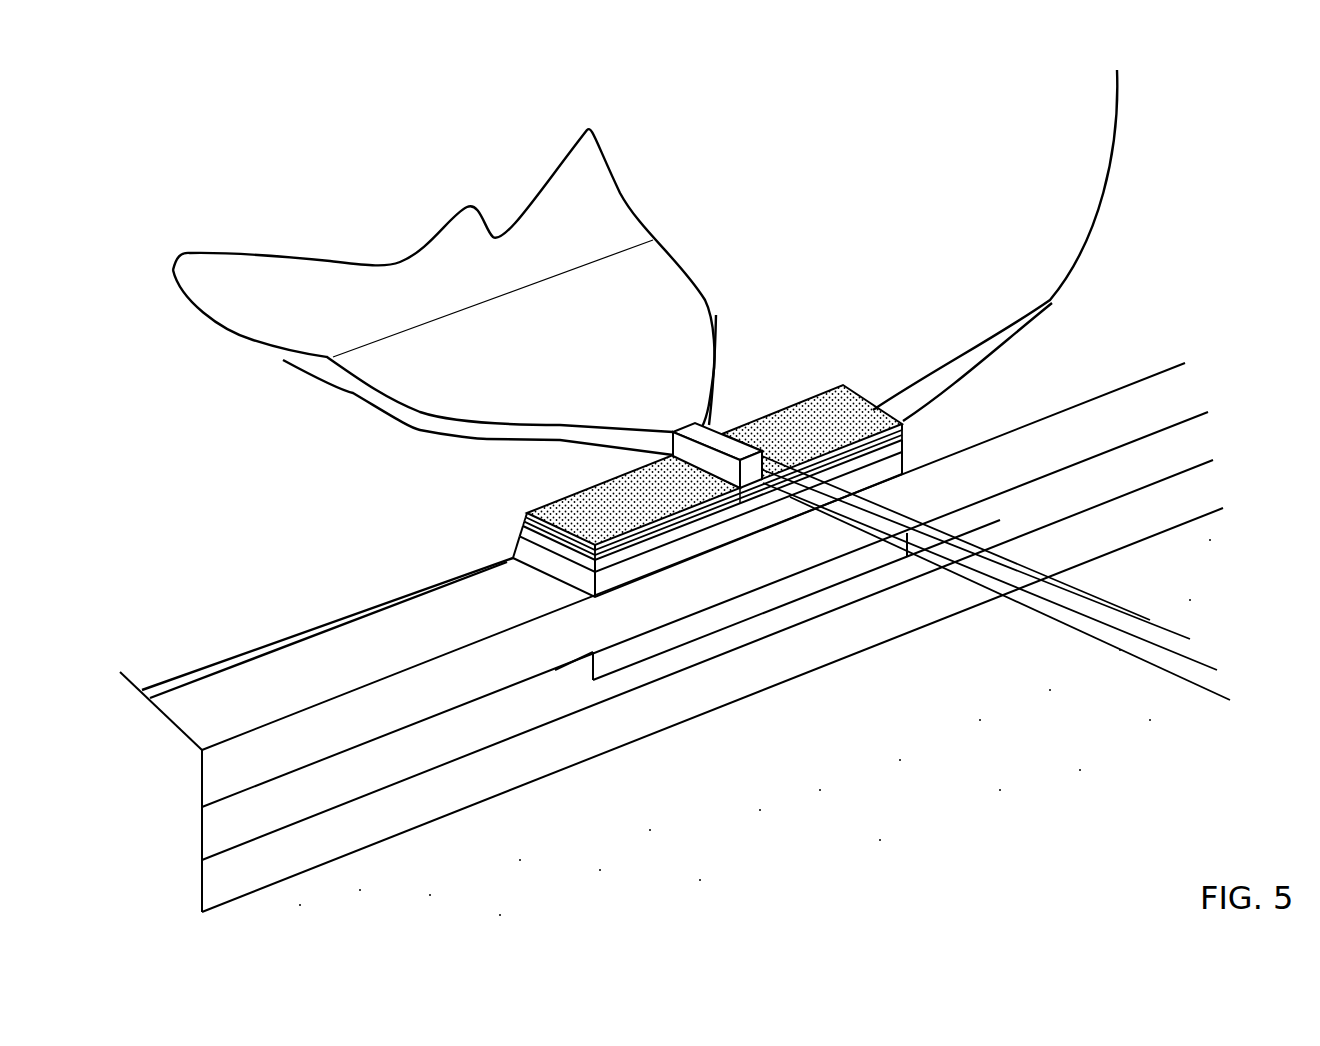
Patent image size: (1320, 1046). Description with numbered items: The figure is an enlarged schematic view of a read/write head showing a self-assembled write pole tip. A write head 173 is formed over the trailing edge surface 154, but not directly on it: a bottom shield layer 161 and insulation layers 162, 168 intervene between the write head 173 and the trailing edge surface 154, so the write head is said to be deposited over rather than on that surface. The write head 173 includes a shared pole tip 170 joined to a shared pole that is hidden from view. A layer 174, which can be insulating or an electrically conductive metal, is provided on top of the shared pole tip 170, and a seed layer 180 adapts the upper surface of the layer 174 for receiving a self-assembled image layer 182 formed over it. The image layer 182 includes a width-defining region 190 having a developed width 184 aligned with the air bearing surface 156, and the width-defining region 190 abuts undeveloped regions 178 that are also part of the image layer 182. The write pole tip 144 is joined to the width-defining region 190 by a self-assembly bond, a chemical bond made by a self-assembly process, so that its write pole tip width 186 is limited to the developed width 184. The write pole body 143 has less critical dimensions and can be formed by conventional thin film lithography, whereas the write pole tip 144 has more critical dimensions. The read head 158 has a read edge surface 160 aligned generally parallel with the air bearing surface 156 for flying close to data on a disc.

The write pole body 143 is at (660, 317).
The write pole tip 144 is at (720, 437).
The trailing edge surface 154 is at (430, 818).
The air bearing surface 156 is at (712, 852).
The read head 158 is at (593, 682).
The read edge surface 160 is at (618, 657).
The bottom shield layer 161 is at (295, 872).
The insulation layer 162 is at (298, 814).
The insulation layer 168 is at (298, 764).
The shared pole tip 170 is at (555, 563).
The write head 173 is at (960, 404).
The layer 174 is at (555, 547).
The undeveloped regions 178 is at (652, 509).
The seed layer 180 is at (525, 521).
The self-assembled image layer 182 is at (527, 518).
The developed width 184 is at (1273, 620).
The write pole tip width 186 is at (1083, 633).
The width-defining region 190 is at (737, 497).